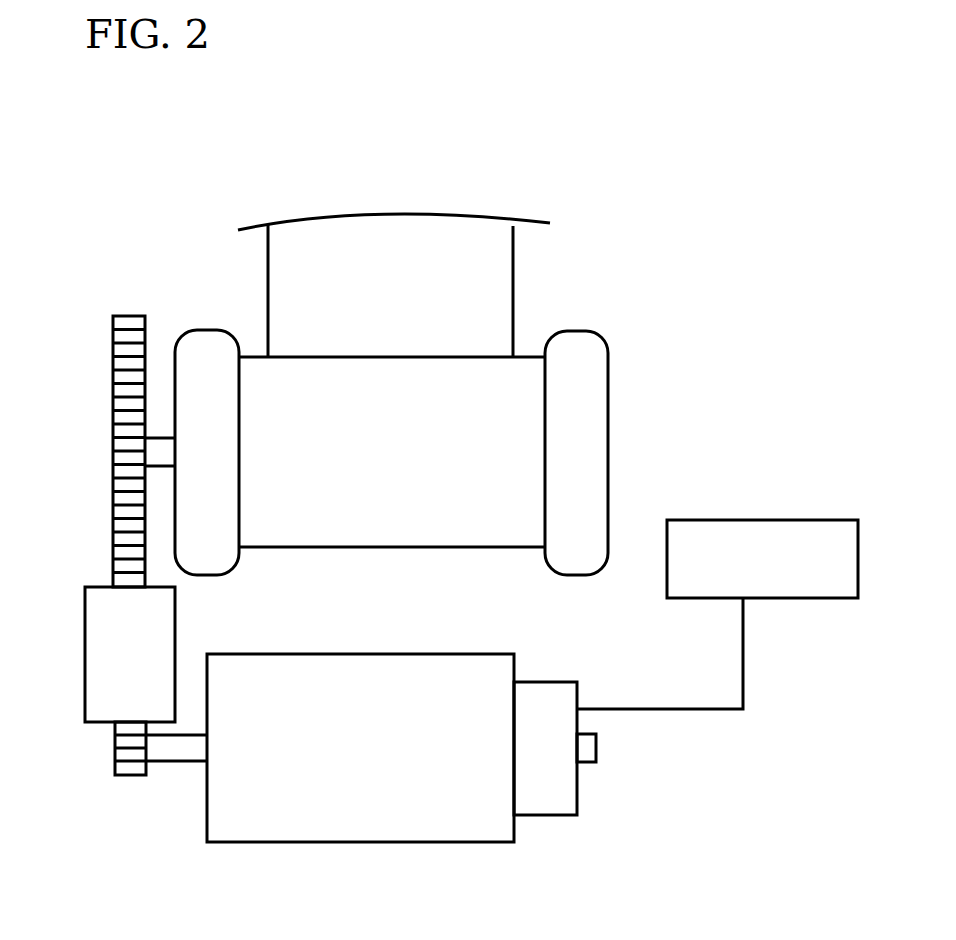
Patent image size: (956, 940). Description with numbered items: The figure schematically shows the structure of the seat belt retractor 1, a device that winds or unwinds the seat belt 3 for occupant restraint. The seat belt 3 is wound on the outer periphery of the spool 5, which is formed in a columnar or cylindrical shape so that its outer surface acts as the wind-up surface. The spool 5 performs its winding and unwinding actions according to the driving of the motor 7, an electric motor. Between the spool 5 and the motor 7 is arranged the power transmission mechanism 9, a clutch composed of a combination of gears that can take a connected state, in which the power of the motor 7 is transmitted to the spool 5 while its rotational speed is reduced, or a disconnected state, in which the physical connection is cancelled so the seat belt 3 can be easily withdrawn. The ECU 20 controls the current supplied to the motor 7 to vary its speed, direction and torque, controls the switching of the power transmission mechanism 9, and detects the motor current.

The seat belt retractor 1 is at (162, 254).
The seat belt 3 is at (448, 253).
The spool 5 is at (503, 395).
The motor 7 is at (363, 828).
The power transmission mechanism 9 is at (84, 621).
The ECU 20 is at (806, 519).